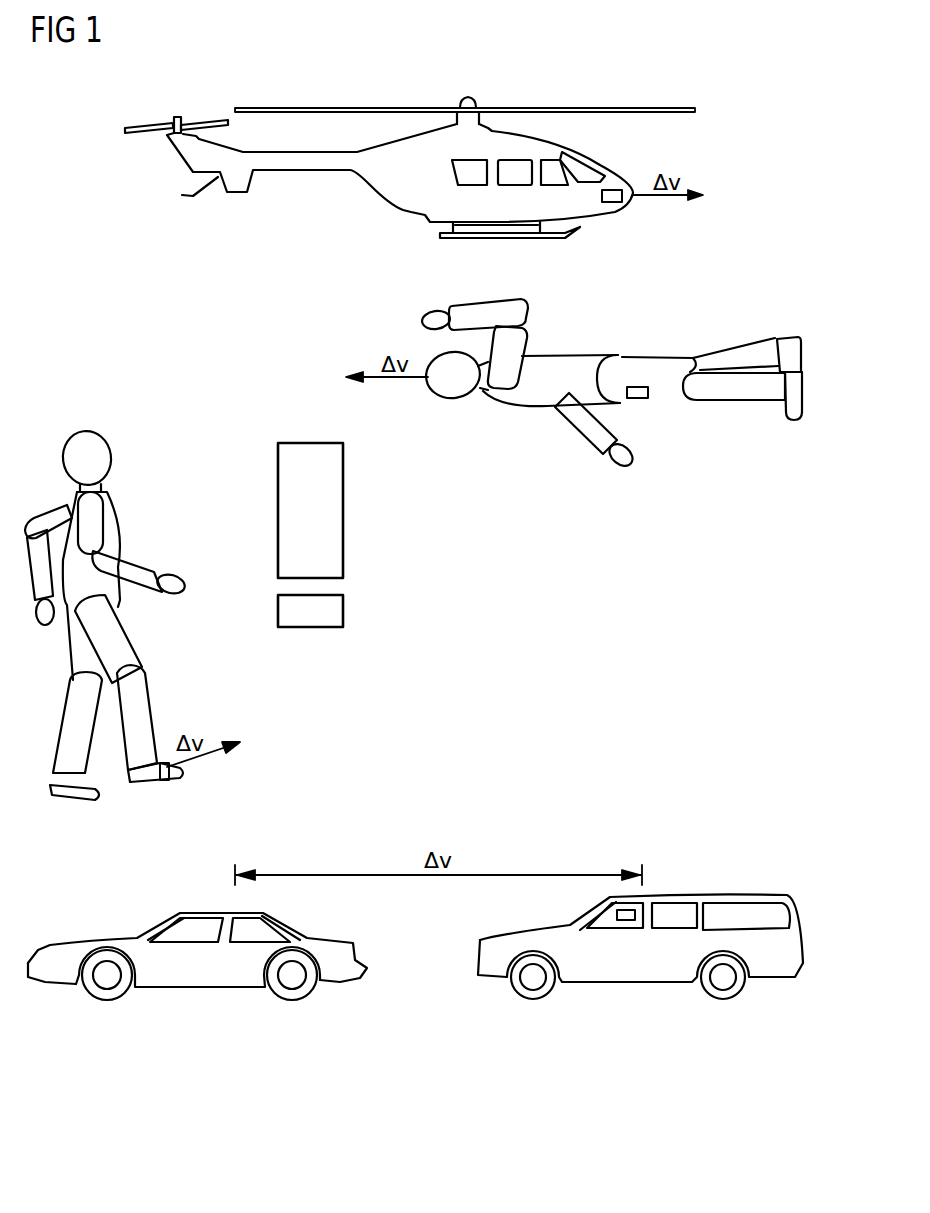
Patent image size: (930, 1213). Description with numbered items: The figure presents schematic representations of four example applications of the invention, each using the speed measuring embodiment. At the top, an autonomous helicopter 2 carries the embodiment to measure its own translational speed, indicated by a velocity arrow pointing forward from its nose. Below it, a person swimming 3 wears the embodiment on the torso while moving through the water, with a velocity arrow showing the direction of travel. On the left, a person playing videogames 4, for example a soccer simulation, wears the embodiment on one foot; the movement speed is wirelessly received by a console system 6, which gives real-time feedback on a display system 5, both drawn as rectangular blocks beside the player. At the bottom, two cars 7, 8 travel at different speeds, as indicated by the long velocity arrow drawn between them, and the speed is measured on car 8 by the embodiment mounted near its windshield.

The autonomous helicopter 2 is at (310, 168).
The person swimming 3 is at (584, 364).
The person playing videogames 4 is at (112, 517).
The display system 5 is at (343, 508).
The console system 6 is at (343, 612).
The car 7 is at (203, 973).
The car 8 is at (580, 973).